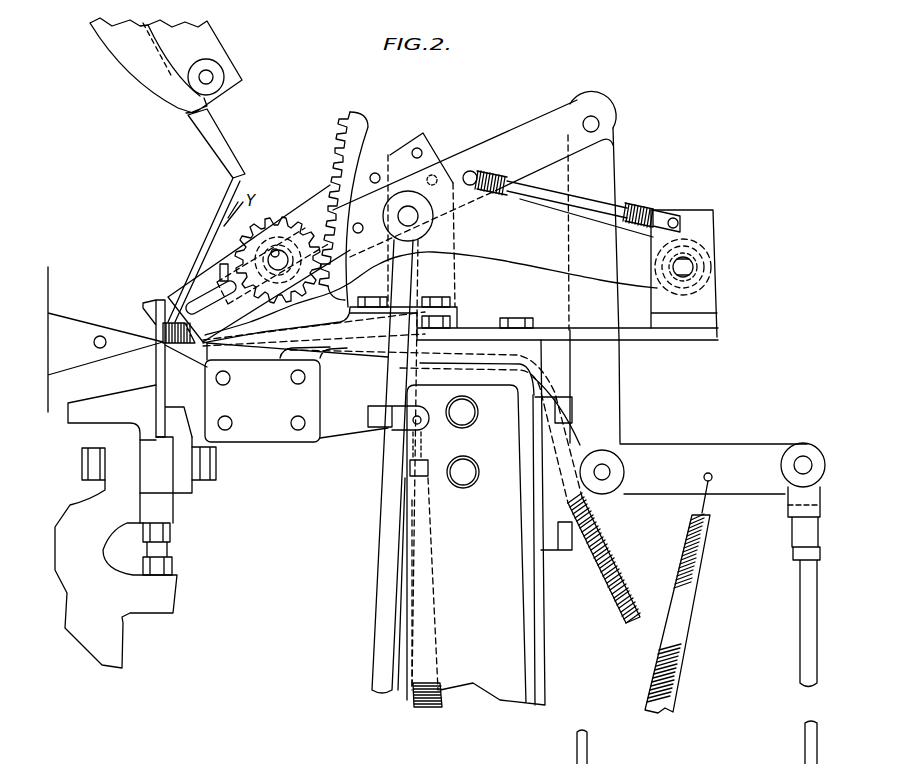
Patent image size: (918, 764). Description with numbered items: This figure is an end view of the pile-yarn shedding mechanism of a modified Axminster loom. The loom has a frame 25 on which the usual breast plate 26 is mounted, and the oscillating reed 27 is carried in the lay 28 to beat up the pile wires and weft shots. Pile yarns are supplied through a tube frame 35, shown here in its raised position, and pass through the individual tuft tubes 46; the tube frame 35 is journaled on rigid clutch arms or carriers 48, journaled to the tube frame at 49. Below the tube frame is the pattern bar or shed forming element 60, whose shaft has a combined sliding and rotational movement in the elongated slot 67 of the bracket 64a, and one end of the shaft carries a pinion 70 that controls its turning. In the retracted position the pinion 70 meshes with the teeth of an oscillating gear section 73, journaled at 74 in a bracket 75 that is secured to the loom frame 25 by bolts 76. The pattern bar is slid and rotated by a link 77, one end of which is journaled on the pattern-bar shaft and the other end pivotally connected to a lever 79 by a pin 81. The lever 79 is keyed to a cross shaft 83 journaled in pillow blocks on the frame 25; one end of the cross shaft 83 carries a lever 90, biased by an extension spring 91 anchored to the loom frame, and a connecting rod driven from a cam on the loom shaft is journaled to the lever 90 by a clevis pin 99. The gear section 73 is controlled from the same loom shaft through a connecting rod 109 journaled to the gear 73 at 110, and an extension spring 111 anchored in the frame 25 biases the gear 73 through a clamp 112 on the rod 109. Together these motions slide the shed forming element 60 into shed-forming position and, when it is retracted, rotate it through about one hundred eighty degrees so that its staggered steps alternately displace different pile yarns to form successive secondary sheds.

The tube frame 35 is at (236, 68).
The clutch arm 48 is at (150, 66).
The journal 49 is at (204, 80).
The tuft tube 46 is at (227, 150).
The oscillating gear section 73 is at (338, 166).
The pinion 70 is at (282, 220).
The shed forming element 60 is at (250, 258).
The bracket 64a is at (190, 287).
The elongated slot 67 is at (211, 297).
The reed 27 is at (156, 372).
The breast plate 26 is at (352, 432).
The clamp 112 is at (372, 410).
The lay 28 is at (175, 590).
The connecting rod 109 is at (385, 650).
The extension spring 111 is at (420, 703).
The frame 25 is at (535, 614).
The cross shaft 83 is at (604, 478).
The lever 90 is at (718, 444).
The clevis pin 99 is at (803, 462).
The extension spring 91 is at (694, 609).
The journal 74 is at (690, 268).
The bracket 75 is at (708, 301).
The lever 79 is at (610, 165).
The pin 81 is at (596, 123).
The link 77 is at (512, 134).
The journal 110 is at (433, 233).
The bolt 76 is at (508, 318).